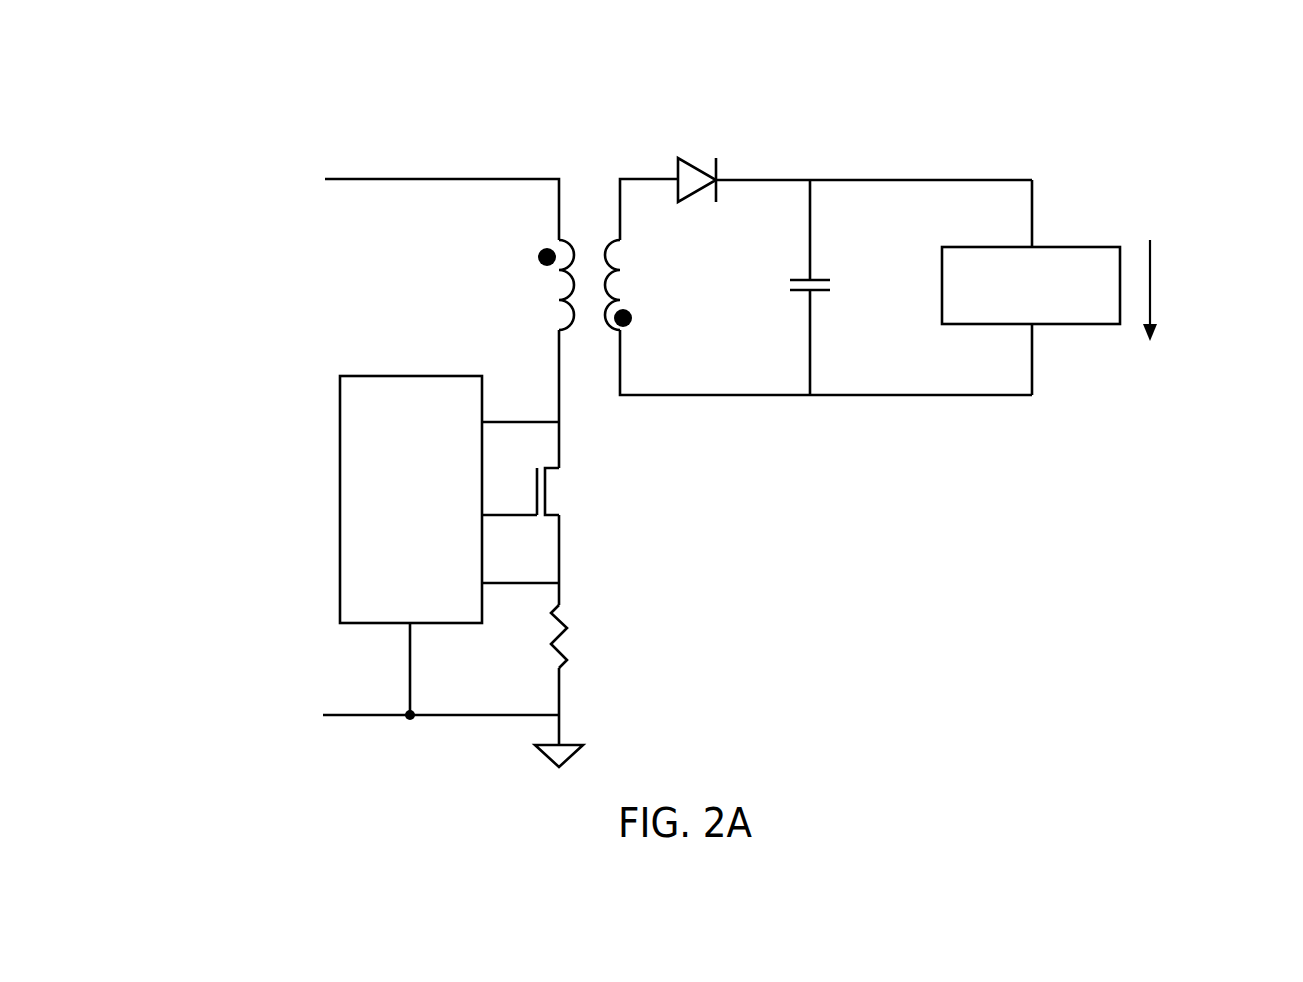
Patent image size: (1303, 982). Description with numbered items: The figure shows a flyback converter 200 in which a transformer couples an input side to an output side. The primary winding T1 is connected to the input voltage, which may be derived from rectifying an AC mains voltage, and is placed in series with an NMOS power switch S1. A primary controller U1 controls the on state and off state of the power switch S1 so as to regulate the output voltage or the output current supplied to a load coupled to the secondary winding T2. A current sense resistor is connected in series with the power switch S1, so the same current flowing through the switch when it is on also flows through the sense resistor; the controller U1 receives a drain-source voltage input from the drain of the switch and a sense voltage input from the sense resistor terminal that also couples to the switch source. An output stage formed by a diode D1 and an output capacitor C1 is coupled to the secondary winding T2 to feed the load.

The flyback converter 200 is at (231, 101).
The primary winding T1 is at (533, 285).
The secondary winding T2 is at (637, 285).
The diode D1 is at (697, 160).
The output capacitor C1 is at (827, 288).
The primary controller U1 is at (391, 499).
The power switch S1 is at (567, 491).